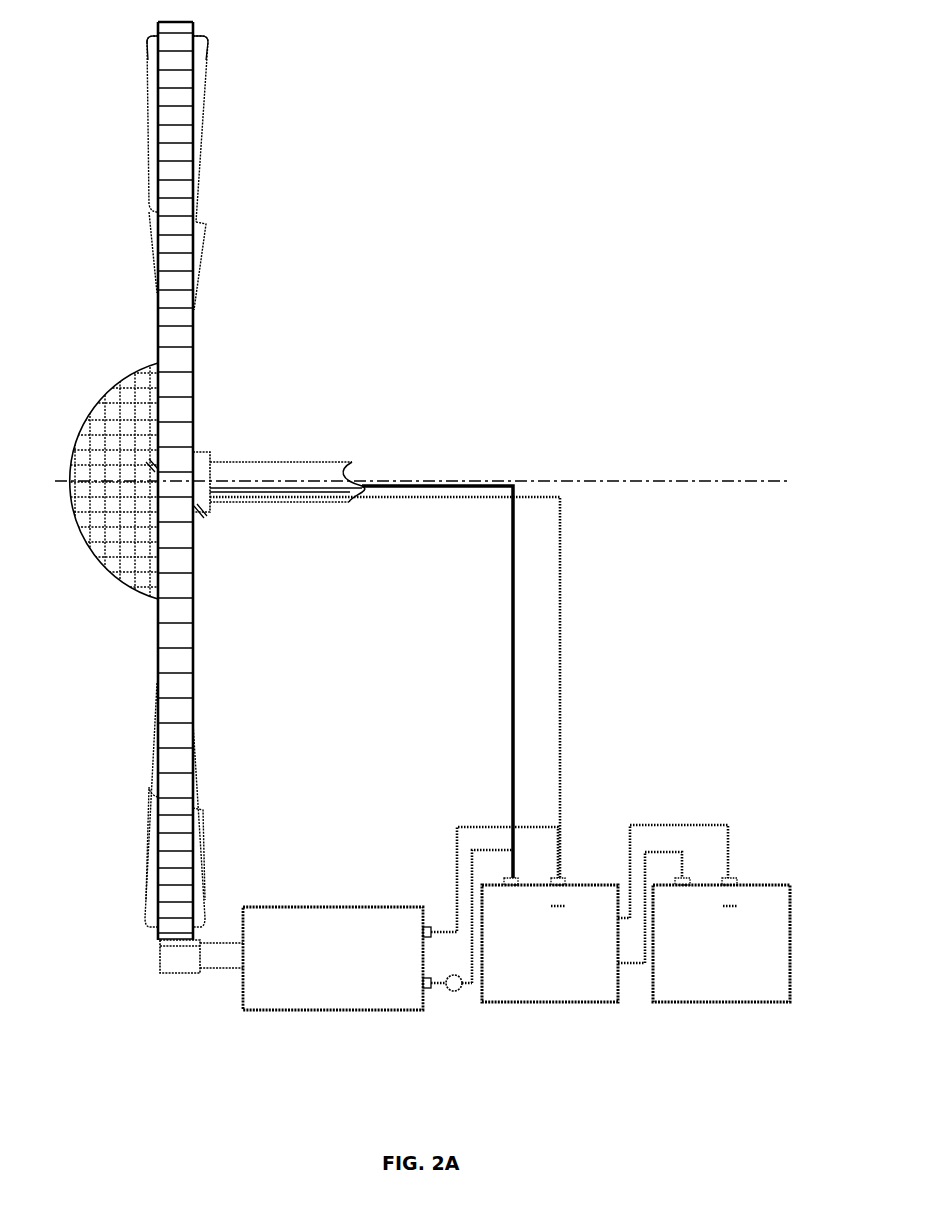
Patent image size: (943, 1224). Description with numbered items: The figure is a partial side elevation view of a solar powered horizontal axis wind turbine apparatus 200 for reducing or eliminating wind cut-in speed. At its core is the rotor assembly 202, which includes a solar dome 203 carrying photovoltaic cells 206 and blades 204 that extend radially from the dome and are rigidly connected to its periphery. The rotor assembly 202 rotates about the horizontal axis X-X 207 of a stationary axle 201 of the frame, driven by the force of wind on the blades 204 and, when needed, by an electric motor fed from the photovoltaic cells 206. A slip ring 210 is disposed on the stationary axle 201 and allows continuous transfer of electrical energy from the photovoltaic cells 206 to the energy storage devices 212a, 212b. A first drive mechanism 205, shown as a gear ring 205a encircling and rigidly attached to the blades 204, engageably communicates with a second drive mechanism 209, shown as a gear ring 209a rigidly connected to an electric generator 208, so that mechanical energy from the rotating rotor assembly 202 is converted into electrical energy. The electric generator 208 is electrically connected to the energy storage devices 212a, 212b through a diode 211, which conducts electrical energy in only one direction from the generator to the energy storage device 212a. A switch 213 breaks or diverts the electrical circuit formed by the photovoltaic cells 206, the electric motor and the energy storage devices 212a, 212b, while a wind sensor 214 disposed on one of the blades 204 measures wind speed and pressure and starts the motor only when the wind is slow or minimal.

The solar powered horizontal axis wind turbine apparatus 200 is at (355, 108).
The stationary axle 201 is at (314, 504).
The rotor assembly 202 is at (134, 298).
The solar dome 203 is at (127, 455).
The blades 204 is at (201, 257).
The first drive mechanism 205 is at (195, 874).
The gear ring 205a is at (213, 118).
The photovoltaic cells 206 is at (99, 418).
The horizontal axis X-X 207 is at (403, 477).
The electric generator 208 is at (353, 996).
The second drive mechanism 209 is at (161, 988).
The gear ring 209a is at (170, 954).
The slip ring 210 is at (201, 452).
The diode 211 is at (453, 992).
The energy storage device 212a is at (633, 936).
The energy storage device 212b is at (748, 1004).
The switch 213 is at (563, 879).
The wind sensor 214 is at (198, 74).